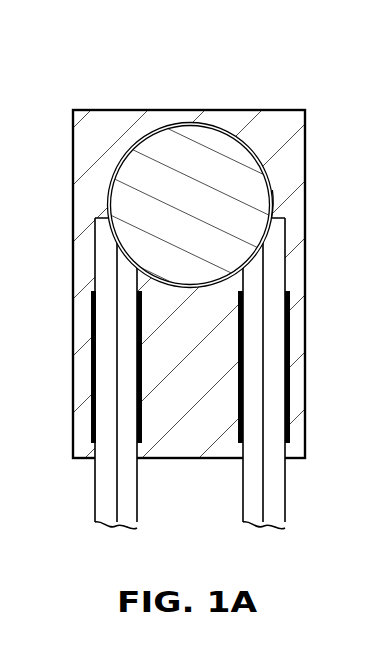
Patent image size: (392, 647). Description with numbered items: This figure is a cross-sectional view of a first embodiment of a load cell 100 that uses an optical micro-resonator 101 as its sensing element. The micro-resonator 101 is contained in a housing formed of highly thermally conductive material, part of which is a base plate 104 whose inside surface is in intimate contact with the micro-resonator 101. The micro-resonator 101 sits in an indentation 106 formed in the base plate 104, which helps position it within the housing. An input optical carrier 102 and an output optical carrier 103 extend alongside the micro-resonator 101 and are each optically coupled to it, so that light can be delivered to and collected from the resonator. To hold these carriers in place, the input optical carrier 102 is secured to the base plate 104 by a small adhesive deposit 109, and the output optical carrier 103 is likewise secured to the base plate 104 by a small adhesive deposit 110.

The load cell 100 is at (196, 323).
The optical micro-resonator 101 is at (219, 138).
The input optical carrier 102 is at (96, 490).
The output optical carrier 103 is at (245, 512).
The base plate 104 is at (138, 109).
The indentation 106 is at (273, 195).
The adhesive deposit 109 is at (91, 424).
The adhesive deposit 110 is at (290, 398).